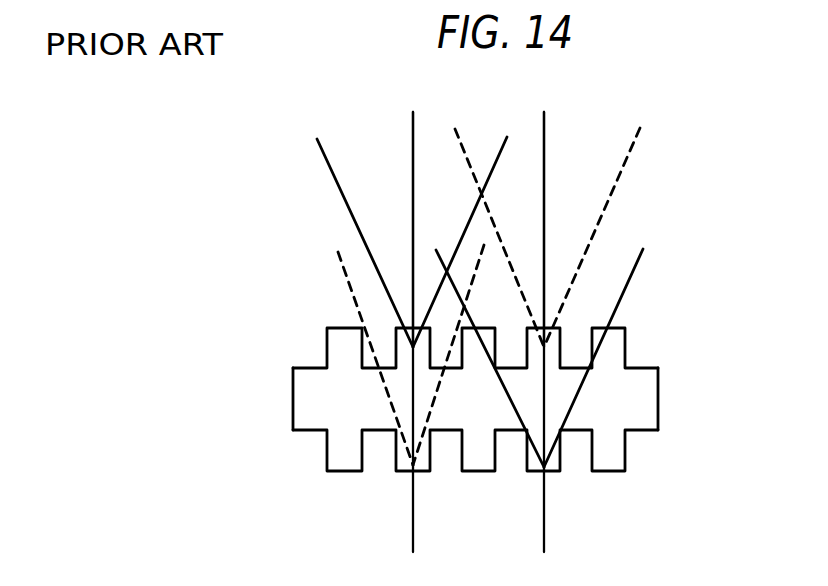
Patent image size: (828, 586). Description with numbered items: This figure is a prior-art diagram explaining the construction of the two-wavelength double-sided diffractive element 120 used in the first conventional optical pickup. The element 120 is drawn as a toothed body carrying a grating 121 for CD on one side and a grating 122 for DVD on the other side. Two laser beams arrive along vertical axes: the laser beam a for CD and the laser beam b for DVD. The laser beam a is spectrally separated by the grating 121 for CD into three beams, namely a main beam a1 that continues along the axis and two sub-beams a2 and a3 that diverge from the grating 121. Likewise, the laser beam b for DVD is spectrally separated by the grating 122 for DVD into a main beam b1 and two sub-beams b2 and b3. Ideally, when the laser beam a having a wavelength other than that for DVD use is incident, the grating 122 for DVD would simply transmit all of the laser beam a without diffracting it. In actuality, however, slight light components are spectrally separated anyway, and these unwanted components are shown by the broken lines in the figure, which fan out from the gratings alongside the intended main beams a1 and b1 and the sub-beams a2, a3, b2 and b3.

The two-wavelength double-sided diffractive element 120 is at (504, 395).
The grating for CD 121 is at (630, 460).
The grating for DVD 122 is at (627, 338).
The laser beam for CD a is at (545, 525).
The main beam a1 is at (546, 130).
The sub-beam a2 is at (466, 323).
The sub-beam a3 is at (638, 267).
The laser beam for DVD b is at (413, 522).
The main beam b1 is at (412, 133).
The sub-beam b2 is at (336, 181).
The sub-beam b3 is at (504, 140).